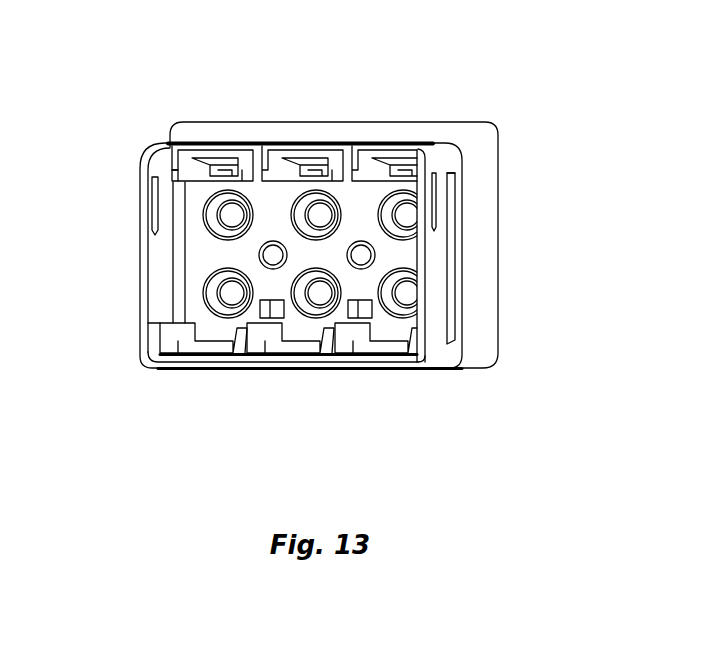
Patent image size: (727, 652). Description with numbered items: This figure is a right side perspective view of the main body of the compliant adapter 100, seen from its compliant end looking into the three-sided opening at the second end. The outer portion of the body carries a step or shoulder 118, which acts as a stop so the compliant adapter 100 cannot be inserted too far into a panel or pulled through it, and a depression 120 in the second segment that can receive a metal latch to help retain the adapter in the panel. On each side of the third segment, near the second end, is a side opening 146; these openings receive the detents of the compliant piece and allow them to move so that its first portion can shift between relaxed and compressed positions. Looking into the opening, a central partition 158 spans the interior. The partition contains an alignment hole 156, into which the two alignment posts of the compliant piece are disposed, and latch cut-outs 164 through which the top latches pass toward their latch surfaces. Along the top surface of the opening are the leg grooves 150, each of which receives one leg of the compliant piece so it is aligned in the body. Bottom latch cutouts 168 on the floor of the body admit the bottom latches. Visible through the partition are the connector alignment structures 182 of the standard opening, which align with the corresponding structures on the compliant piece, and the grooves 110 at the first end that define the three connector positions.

The compliant adapter 100 is at (551, 95).
The grooves 110 is at (207, 143).
The shoulder 118 is at (435, 131).
The depression 120 is at (448, 256).
The side openings 146 is at (152, 215).
The leg grooves 150 is at (167, 145).
The alignment hole 156 is at (377, 263).
The central partition 158 is at (362, 193).
The latch cut-out 164 is at (178, 181).
The latch cutout 168 is at (363, 310).
The connector alignment structures 182 is at (213, 298).